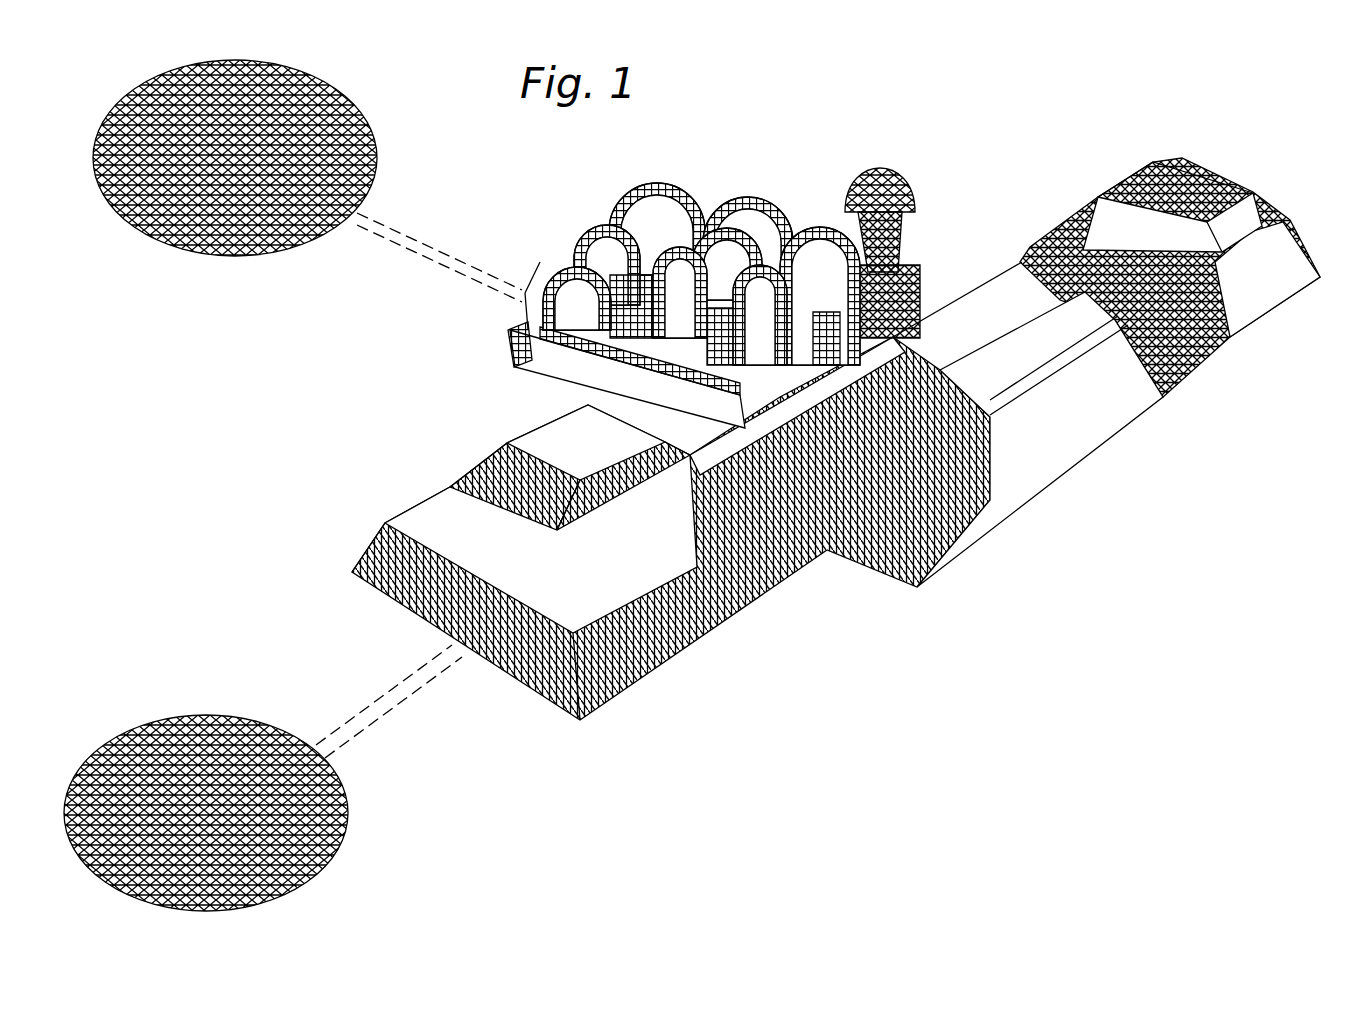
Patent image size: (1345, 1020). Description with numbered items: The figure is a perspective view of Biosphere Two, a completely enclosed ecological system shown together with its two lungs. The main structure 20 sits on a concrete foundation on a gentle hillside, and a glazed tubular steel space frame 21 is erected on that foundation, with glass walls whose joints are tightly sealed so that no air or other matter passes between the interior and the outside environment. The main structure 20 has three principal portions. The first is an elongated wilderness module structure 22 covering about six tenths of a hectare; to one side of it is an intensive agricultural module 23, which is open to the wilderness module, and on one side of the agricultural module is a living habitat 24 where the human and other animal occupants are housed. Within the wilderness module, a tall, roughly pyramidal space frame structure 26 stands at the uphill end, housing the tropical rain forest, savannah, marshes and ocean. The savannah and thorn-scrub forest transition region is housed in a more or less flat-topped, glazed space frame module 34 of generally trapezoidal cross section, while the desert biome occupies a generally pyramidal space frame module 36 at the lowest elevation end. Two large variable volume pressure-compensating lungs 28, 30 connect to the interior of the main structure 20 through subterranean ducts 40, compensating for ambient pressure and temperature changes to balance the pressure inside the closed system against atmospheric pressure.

The main structure 20 is at (799, 731).
The glazed tubular steel space frame 21 is at (952, 563).
The wilderness module structure 22 is at (1245, 330).
The intensive agricultural module 23 is at (744, 298).
The living habitat 24 is at (925, 240).
The pyramidal space frame structure 26 is at (1255, 212).
The lung 28 is at (356, 113).
The lung 30 is at (170, 713).
The flat-topped glazed space frame module 34 is at (1130, 432).
The pyramidal space frame module 36 is at (448, 490).
The subterranean ducts 40 is at (455, 248).